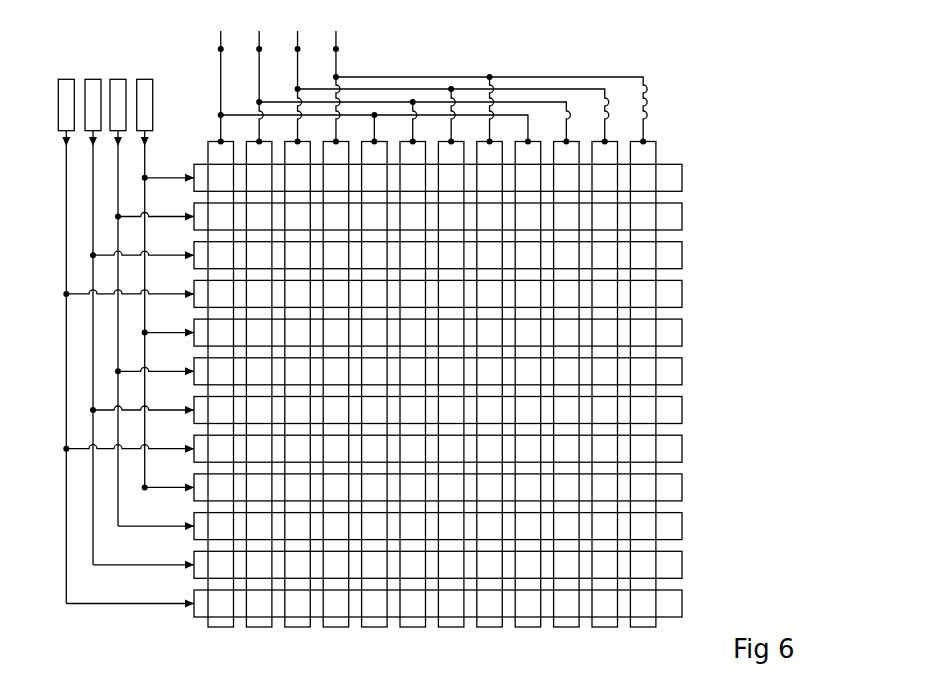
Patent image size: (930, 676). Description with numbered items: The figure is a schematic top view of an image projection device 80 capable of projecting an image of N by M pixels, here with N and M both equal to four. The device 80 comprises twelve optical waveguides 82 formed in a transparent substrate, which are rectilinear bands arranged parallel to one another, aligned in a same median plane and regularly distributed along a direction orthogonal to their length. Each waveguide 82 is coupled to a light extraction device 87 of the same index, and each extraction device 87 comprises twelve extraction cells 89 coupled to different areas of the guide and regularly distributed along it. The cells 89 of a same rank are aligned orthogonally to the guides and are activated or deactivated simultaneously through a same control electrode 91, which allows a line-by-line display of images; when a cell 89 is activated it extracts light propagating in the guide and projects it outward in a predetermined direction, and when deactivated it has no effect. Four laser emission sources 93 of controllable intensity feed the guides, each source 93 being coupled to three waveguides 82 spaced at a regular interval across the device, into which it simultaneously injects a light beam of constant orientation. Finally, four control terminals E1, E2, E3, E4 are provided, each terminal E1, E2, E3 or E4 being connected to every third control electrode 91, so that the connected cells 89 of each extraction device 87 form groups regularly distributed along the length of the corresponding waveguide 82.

The image projection device 80 is at (634, 50).
The optical waveguides 82 is at (486, 390).
The light extraction devices 87 is at (672, 185).
The control electrodes 91 is at (206, 151).
The laser emission sources 93 is at (66, 79).
The extraction cells 89 is at (646, 530).
The control terminal E1 is at (371, 78).
The control terminal E2 is at (409, 78).
The control terminal E3 is at (448, 78).
The control terminal E4 is at (486, 78).